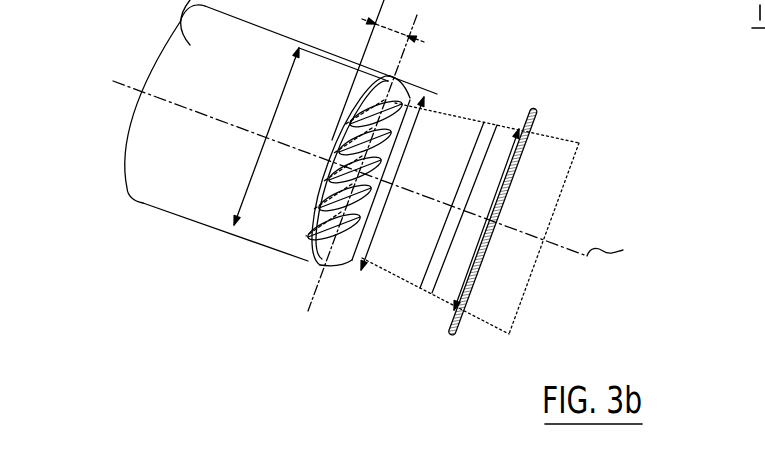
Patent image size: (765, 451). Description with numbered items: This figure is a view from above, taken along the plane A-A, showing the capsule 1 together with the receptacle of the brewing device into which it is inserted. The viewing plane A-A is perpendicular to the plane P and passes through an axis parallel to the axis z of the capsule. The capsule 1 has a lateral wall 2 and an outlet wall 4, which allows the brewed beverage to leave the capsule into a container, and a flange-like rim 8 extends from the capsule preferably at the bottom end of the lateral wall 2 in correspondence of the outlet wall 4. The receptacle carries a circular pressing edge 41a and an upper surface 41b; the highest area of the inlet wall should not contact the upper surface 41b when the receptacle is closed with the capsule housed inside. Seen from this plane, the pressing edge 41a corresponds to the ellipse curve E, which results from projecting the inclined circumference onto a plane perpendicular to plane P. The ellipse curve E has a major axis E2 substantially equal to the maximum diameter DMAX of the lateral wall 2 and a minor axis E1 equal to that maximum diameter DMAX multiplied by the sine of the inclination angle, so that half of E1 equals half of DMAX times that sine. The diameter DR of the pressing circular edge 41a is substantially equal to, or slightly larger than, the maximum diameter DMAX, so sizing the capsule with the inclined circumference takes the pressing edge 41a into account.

The capsule 1 is at (417, 280).
The lateral wall 2 is at (472, 128).
The outlet wall 4 is at (467, 298).
The flange-like rim 8 is at (540, 112).
The pressing circular edge 41a is at (305, 262).
The upper surface of the receptacle 41b is at (152, 66).
The plane A- A is at (381, 171).
The ellipse curve E is at (323, 263).
The minor axis of the ellipse E1 is at (406, 15).
The major axis of the ellipse E2 is at (420, 138).
The diameter of the circular pressing edge DR is at (266, 136).
The maximum diameter of the lateral wall DMAX is at (486, 219).